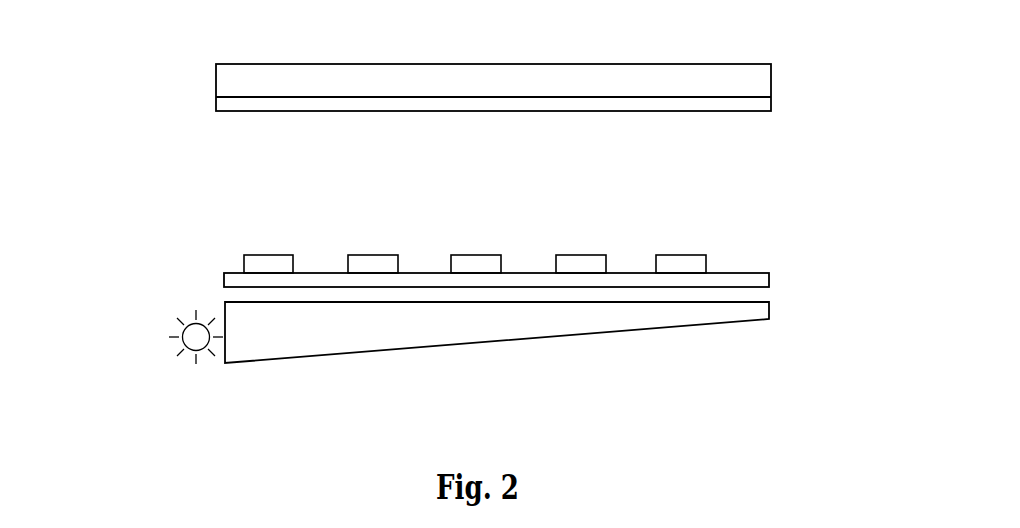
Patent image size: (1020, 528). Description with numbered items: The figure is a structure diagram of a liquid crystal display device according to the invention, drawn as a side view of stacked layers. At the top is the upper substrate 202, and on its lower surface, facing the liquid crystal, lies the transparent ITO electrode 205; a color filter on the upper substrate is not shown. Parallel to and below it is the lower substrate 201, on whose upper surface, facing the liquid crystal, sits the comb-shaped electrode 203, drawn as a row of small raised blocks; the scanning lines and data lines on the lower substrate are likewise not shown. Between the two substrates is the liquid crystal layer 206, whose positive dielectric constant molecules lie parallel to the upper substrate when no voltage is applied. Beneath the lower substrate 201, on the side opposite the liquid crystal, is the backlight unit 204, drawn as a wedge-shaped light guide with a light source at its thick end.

The lower substrate 201 is at (741, 272).
The upper substrate 202 is at (749, 84).
The comb-shaped electrode 203 is at (236, 262).
The backlight unit 204 is at (266, 326).
The transparent ITO electrode 205 is at (226, 95).
The liquid crystal layer 206 is at (223, 181).